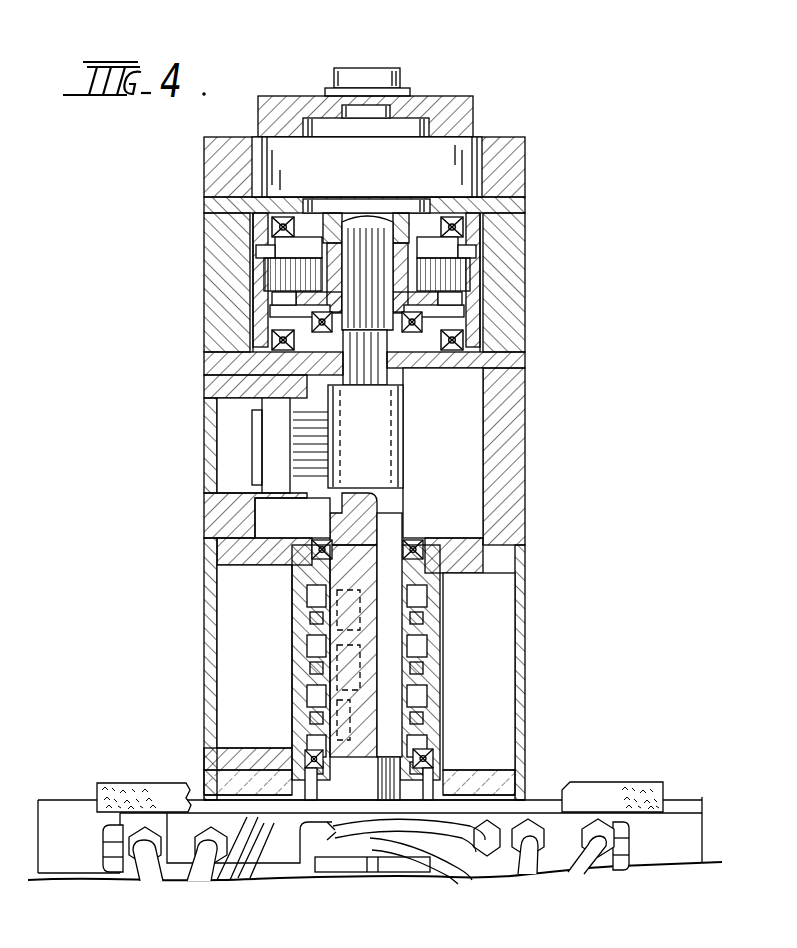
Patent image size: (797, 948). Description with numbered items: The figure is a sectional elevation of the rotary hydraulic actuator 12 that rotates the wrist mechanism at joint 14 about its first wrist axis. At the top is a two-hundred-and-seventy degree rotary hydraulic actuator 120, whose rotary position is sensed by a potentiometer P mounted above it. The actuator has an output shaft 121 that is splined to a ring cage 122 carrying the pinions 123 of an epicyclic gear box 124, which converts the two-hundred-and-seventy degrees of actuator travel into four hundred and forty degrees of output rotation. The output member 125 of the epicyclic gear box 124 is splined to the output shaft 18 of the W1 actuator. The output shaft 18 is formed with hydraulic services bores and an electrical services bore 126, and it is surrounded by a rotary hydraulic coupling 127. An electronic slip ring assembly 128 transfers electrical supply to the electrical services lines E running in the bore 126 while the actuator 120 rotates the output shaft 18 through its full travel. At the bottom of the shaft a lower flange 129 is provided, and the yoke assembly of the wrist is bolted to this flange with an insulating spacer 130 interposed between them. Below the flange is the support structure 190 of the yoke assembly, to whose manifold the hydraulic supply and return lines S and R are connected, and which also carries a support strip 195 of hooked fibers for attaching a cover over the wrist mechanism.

The rotary hydraulic actuator 12 is at (534, 157).
The joint 14 is at (548, 548).
The output shaft 18 is at (377, 376).
The rotary hydraulic actuator 120 is at (218, 160).
The output shaft 121 is at (352, 230).
The ring cage 122 is at (300, 300).
The pinions 123 is at (290, 272).
The epicyclic gear box 124 is at (486, 238).
The output member 125 is at (290, 360).
The electrical services bore 126 is at (400, 643).
The rotary hydraulic coupling 127 is at (300, 622).
The electronic slip ring assembly 128 is at (275, 430).
The lower flange 129 is at (525, 780).
The insulating spacer 130 is at (300, 790).
The support structure 190 is at (681, 776).
The support strip 195 is at (110, 783).
The potentiometer P is at (408, 71).
The electrical services lines E is at (390, 720).
The hydraulic return lines R is at (142, 895).
The hydraulic supply lines S is at (192, 890).